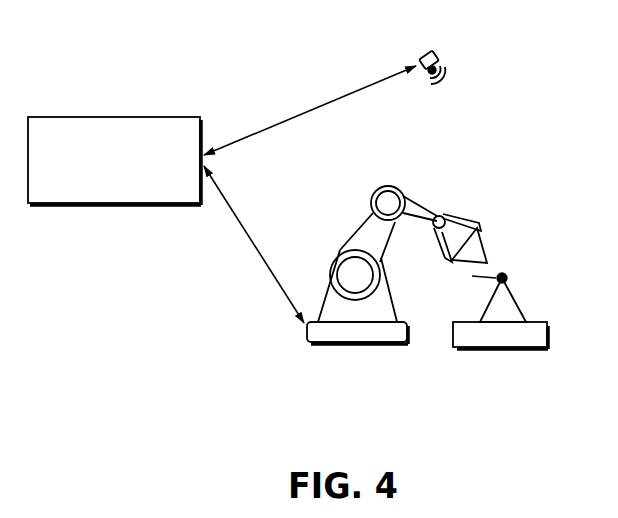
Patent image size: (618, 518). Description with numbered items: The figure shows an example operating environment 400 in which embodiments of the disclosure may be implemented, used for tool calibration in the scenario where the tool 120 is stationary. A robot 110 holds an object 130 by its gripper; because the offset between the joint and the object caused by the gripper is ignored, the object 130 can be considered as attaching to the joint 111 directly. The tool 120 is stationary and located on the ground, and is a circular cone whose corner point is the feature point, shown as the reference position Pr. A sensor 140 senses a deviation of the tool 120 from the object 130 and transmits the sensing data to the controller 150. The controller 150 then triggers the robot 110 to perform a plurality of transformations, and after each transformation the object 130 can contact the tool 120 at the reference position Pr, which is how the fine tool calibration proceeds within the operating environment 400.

The robot 110 is at (372, 191).
The joint 111 is at (447, 215).
The tool 120 is at (514, 299).
The object 130 is at (488, 247).
The sensor 140 is at (441, 55).
The controller 150 is at (61, 116).
The operating environment 400 is at (307, 70).